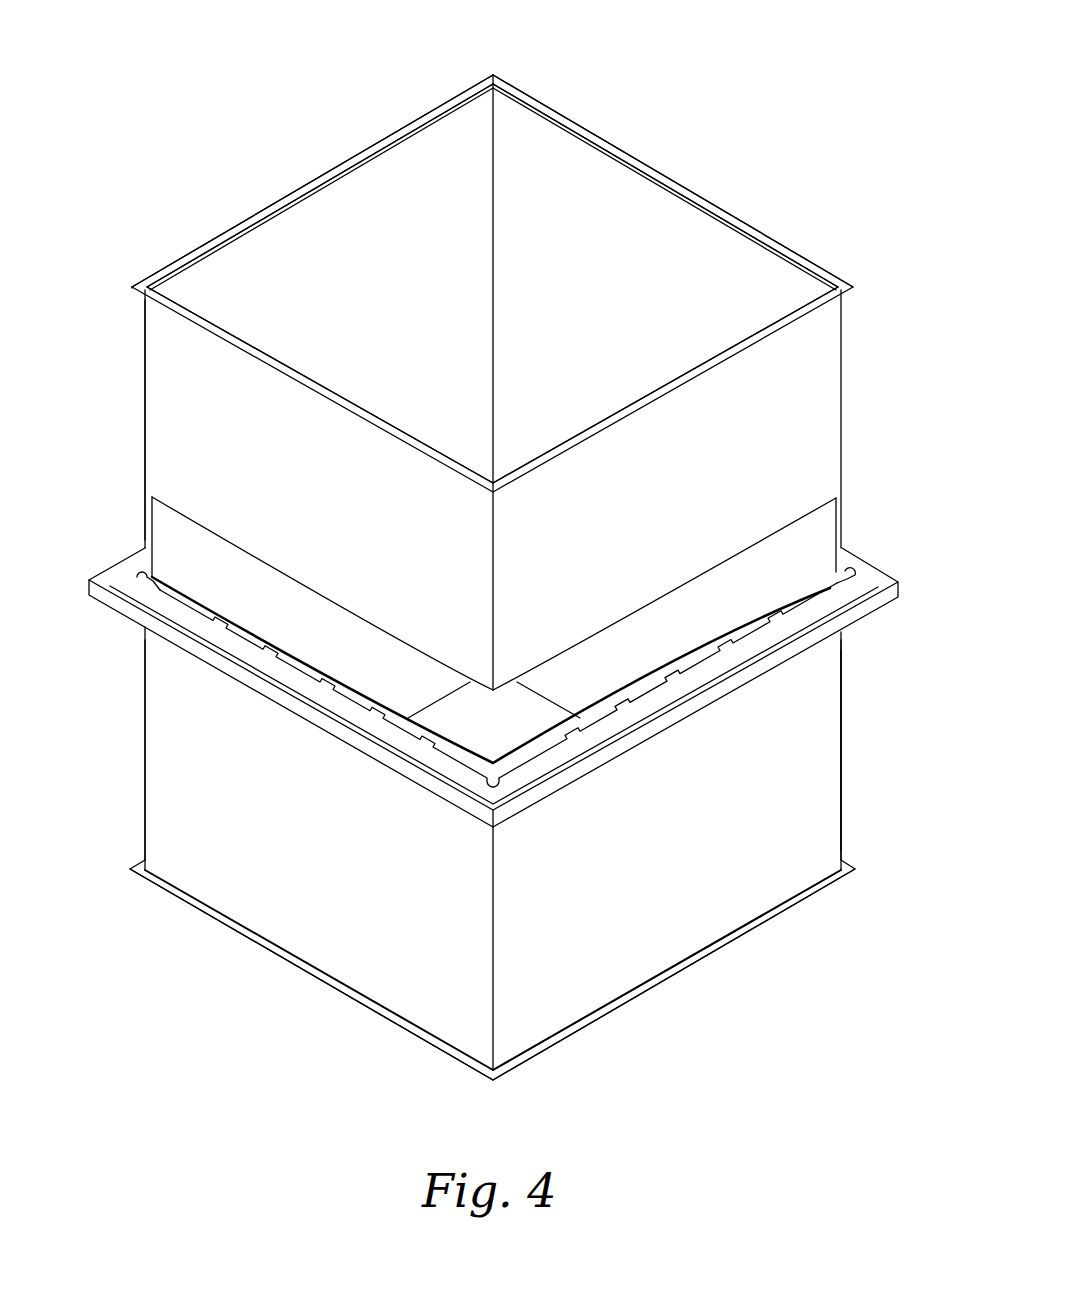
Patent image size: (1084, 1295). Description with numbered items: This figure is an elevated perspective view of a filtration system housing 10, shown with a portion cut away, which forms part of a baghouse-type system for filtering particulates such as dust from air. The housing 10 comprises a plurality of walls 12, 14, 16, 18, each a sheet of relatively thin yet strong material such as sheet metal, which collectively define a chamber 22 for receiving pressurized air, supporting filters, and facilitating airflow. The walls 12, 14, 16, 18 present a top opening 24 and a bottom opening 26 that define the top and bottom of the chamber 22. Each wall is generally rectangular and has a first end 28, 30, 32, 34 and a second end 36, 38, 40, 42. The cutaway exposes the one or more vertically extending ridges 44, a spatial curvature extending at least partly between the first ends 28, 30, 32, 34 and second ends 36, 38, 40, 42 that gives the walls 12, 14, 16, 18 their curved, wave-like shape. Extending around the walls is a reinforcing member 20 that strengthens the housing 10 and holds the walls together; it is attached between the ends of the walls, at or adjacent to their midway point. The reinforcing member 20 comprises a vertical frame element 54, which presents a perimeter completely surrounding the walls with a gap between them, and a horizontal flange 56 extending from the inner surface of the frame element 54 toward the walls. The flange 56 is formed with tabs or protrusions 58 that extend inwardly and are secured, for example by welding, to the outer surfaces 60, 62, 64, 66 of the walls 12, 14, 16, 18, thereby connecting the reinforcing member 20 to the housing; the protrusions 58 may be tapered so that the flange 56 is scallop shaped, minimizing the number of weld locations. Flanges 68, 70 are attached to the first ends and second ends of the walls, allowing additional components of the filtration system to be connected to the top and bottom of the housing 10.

The filtration system housing 10 is at (808, 78).
The wall 12 is at (500, 357).
The wall 14 is at (160, 405).
The wall 16 is at (400, 167).
The wall 18 is at (755, 255).
The reinforcing member 20 is at (525, 646).
The chamber 22 is at (557, 195).
The top opening 24 is at (872, 276).
The bottom opening 26 is at (735, 968).
The first end 28 is at (657, 395).
The first end 30 is at (357, 415).
The first end 32 is at (327, 175).
The first end 34 is at (670, 180).
The second end 36 is at (577, 1008).
The second end 38 is at (313, 950).
The second end 40 is at (498, 853).
The second end 42 is at (862, 802).
The ridge 44 is at (494, 630).
The frame element 54 is at (850, 617).
The flange 56 is at (856, 567).
The protrusion 58 is at (267, 650).
The outer surface 60 is at (663, 809).
The outer surface 62 is at (286, 814).
The outer surface 64 is at (128, 312).
The outer surface 66 is at (860, 335).
The flange 68 is at (455, 100).
The flange 70 is at (403, 1022).